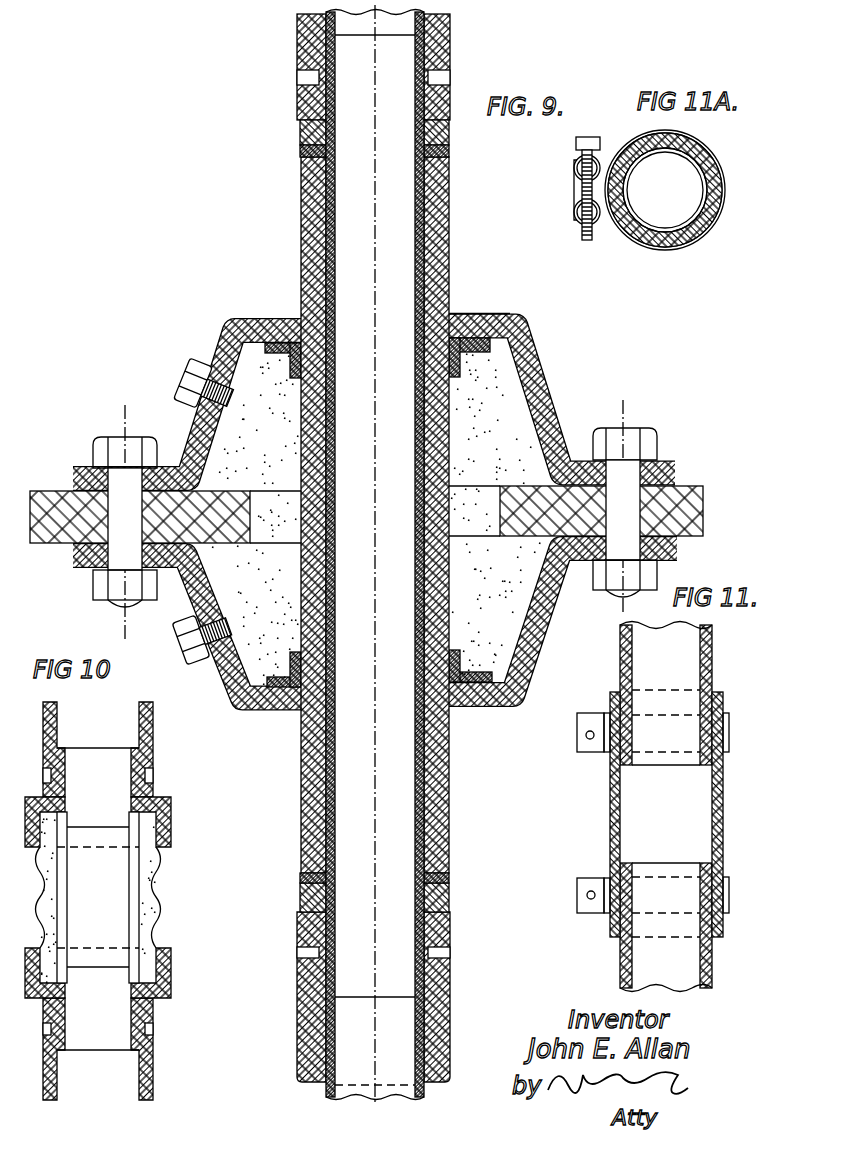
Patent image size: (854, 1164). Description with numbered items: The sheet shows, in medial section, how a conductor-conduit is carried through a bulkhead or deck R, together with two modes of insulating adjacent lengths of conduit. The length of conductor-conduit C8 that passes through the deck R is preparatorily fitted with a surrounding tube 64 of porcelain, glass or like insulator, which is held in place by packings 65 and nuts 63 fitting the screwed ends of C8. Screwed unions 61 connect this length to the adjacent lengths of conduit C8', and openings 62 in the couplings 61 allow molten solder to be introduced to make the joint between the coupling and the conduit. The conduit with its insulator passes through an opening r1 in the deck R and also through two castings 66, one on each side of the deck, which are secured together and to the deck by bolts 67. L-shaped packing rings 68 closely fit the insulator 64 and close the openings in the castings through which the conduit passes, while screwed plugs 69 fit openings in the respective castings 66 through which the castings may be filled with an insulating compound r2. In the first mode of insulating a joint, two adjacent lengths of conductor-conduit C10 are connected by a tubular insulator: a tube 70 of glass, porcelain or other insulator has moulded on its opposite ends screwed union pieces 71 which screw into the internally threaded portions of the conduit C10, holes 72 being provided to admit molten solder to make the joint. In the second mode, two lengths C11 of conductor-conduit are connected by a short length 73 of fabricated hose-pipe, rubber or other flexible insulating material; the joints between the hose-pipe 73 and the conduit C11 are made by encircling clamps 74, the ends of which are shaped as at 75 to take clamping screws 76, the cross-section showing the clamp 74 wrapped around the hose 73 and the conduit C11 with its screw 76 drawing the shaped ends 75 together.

In FIG. 9, the screwed union 61 is at (448, 66).
In FIG. 9, the opening 62 is at (300, 77).
In FIG. 9, the nut 63 is at (449, 135).
In FIG. 9, the surrounding tube 64 is at (449, 222).
In FIG. 9, the packing 65 is at (449, 152).
In FIG. 9, the casting 66 is at (543, 407).
In FIG. 9, the bolt 67 is at (117, 422).
In FIG. 9, the L-shaped packing ring 68 is at (507, 327).
In FIG. 9, the screwed plug 69 is at (193, 388).
In FIG. 9, the insulator tube 70 is at (505, 316).
In FIG. 10, the insulator tube 70 is at (164, 865).
In FIG. 10, the screwed union piece 71 is at (168, 808).
In FIG. 10, the hole 72 is at (153, 776).
In FIG. 11, the hose-pipe 73 is at (718, 808).
In FIG. 11A, the hose-pipe 73 is at (712, 213).
In FIG. 11, the encircling clamp 74 is at (729, 727).
In FIG. 11A, the encircling clamp 74 is at (700, 243).
In FIG. 11, the clamp end 75 is at (580, 713).
In FIG. 11A, the clamp end 75 is at (576, 205).
In FIG. 11, the clamping screw 76 is at (590, 739).
In FIG. 11A, the clamping screw 76 is at (591, 137).
In FIG. 9, the conductor-conduit length C8 is at (417, 554).
In FIG. 9, the adjacent conduit length C8' is at (409, 555).
In FIG. 10, the conductor-conduit length C10 is at (150, 724).
In FIG. 11, the conductor-conduit length C11 is at (712, 638).
In FIG. 11A, the conductor-conduit length C11 is at (705, 176).
In FIG. 9, the deck R is at (57, 540).
In FIG. 9, the opening in deck r1 is at (270, 530).
In FIG. 9, the insulating compound r2 is at (502, 390).